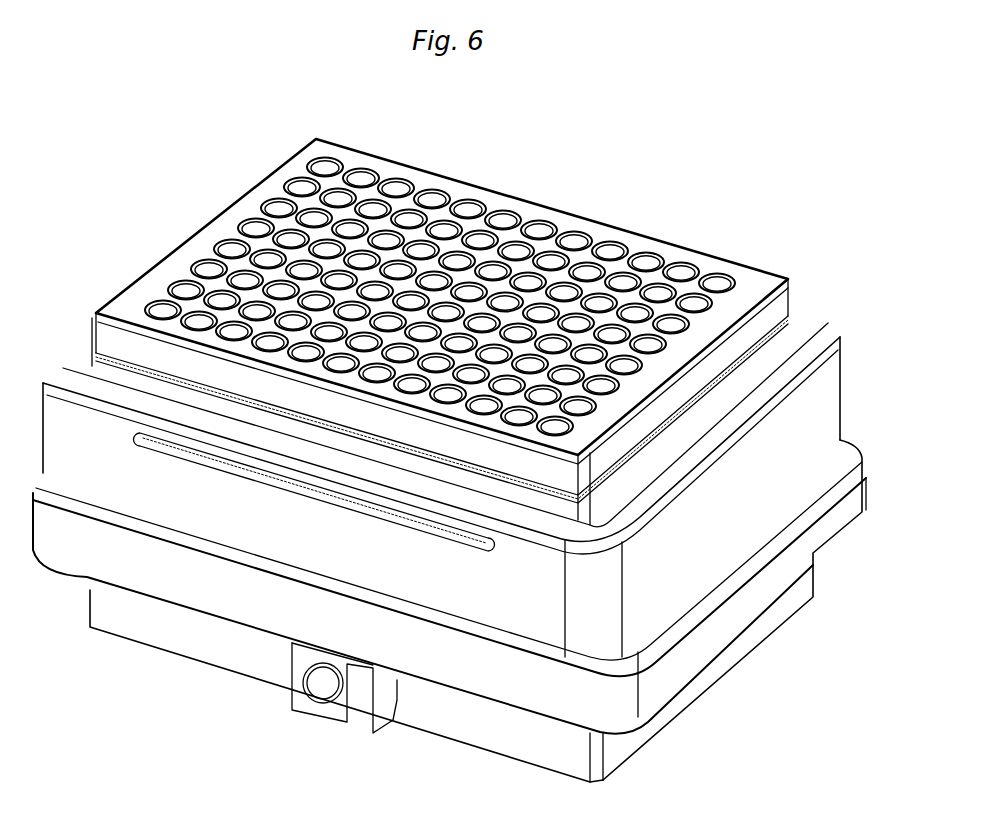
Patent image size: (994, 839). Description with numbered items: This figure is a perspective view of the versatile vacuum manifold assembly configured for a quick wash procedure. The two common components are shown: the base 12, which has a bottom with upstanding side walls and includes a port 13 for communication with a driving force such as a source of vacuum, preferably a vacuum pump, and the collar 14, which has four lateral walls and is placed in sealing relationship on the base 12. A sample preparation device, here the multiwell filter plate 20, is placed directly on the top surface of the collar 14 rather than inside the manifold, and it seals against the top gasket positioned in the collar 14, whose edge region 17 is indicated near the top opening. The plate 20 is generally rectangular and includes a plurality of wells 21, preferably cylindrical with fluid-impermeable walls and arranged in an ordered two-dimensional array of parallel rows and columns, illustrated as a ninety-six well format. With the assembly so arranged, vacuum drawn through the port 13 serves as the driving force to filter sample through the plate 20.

The base 12 is at (841, 567).
The port 13 is at (328, 690).
The collar 14 is at (817, 397).
The adapter rim 17 is at (808, 311).
The filter plate 20 is at (775, 298).
The wells 21 is at (682, 262).